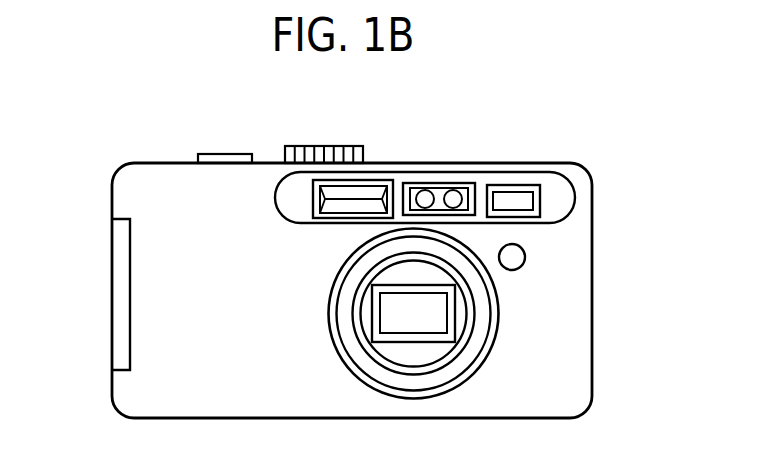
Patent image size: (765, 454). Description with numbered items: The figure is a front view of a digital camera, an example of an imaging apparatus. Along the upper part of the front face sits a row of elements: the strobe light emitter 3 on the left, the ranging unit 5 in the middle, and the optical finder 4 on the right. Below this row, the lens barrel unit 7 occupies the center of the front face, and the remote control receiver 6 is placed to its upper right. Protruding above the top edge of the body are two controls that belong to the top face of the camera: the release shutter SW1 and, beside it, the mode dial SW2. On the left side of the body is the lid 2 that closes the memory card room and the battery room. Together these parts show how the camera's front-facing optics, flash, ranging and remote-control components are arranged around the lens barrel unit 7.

The release shutter SW1 is at (230, 154).
The mode dial SW2 is at (337, 146).
The lid 2 is at (118, 295).
The strobe light emitter 3 is at (372, 190).
The optical finder 4 is at (515, 193).
The ranging unit 5 is at (438, 189).
The remote control receiver 6 is at (521, 258).
The lens barrel unit 7 is at (435, 352).